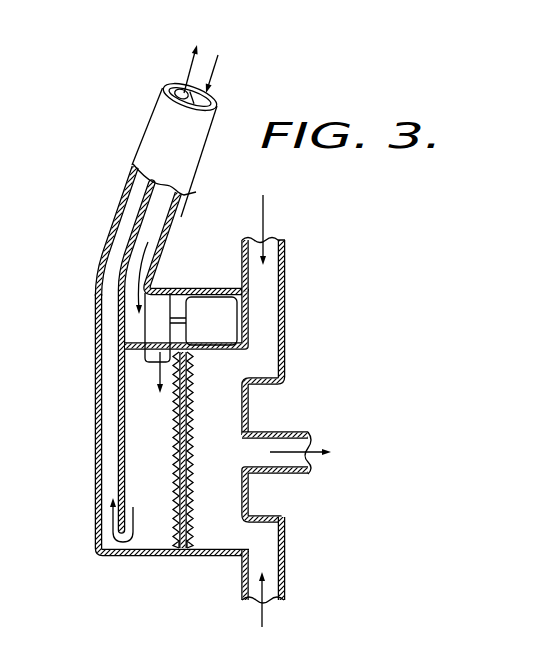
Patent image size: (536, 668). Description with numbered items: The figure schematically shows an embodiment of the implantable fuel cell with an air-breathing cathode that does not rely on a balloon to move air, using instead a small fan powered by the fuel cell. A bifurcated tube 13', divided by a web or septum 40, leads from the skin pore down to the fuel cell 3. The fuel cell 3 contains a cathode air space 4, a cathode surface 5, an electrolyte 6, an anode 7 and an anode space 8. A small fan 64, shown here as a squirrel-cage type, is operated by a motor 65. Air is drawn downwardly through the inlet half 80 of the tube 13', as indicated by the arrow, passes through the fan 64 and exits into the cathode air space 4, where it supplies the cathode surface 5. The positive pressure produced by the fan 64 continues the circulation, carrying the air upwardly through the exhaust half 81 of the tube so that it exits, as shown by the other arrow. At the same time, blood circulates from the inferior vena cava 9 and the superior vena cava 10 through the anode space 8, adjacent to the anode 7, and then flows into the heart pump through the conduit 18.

The fuel cell 3 is at (96, 388).
The cathode air space 4 is at (160, 429).
The cathode surface 5 is at (176, 460).
The electrolyte 6 is at (183, 554).
The anode 7 is at (196, 498).
The anode space 8 is at (230, 462).
The inferior vena cava 9 is at (286, 560).
The superior vena cava 10 is at (287, 273).
The bifurcated tube 13' is at (186, 147).
The conduit 18 is at (290, 432).
The web or septum 40 is at (190, 94).
The fan 64 is at (156, 298).
The motor 65 is at (212, 304).
The inlet half 80 is at (166, 217).
The exhaust half 81 is at (121, 212).